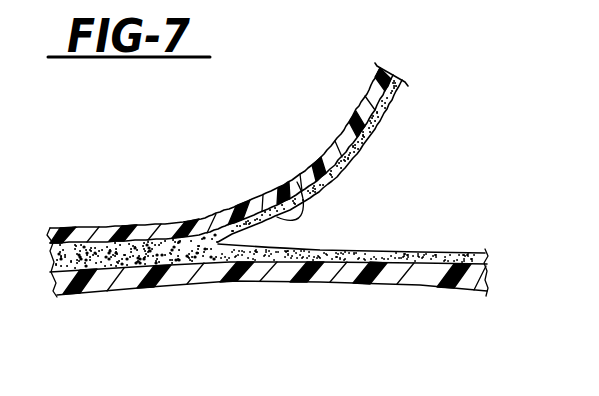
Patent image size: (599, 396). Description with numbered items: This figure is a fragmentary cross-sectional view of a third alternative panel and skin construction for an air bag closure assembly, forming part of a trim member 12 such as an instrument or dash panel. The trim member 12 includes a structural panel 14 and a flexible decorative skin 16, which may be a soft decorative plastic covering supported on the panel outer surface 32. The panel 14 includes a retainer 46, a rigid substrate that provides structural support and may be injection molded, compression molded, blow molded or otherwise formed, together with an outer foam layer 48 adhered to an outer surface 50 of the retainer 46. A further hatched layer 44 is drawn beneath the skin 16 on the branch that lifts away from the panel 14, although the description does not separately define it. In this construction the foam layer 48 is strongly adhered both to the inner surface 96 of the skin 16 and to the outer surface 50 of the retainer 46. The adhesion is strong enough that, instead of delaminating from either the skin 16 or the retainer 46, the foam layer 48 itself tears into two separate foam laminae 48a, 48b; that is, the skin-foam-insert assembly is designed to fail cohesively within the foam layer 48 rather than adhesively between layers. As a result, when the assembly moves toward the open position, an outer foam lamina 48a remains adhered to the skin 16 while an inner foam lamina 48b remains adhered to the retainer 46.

The trim member 12 is at (317, 281).
The structural panel 14 is at (413, 289).
The decorative skin 16 is at (365, 129).
The panel outer surface 32 is at (366, 252).
The upper layer 44 is at (143, 233).
The retainer 46 is at (277, 270).
The foam layer 48 is at (92, 258).
The outer foam lamina 48a is at (372, 119).
The inner foam lamina 48b is at (430, 250).
The retainer outer surface 50 is at (458, 257).
The skin inner surface 96 is at (297, 182).